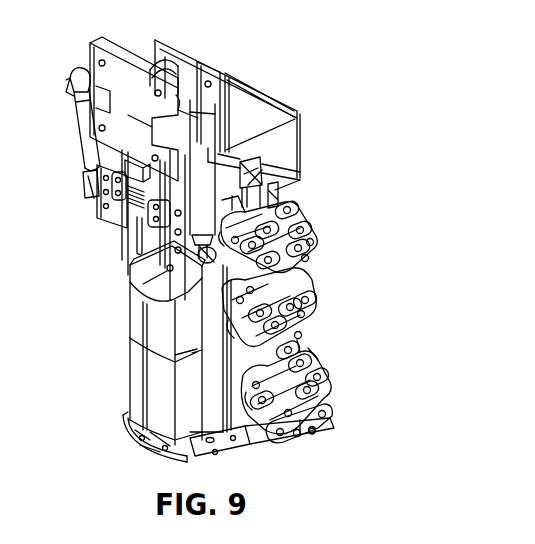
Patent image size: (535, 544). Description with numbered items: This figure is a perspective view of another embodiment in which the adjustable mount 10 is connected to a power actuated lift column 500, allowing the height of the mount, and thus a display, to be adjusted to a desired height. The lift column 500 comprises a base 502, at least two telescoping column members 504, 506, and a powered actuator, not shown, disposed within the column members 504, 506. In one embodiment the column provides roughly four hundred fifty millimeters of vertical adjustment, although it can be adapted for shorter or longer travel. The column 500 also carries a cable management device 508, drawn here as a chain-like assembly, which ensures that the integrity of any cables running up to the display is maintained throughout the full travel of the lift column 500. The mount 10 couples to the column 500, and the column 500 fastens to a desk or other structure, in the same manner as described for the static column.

The mount 10 is at (60, 100).
The power actuated lift column 500 is at (343, 218).
The base 502 is at (243, 447).
The telescoping column member 504 is at (142, 450).
The telescoping column member 506 is at (132, 328).
The cable management device 508 is at (308, 338).